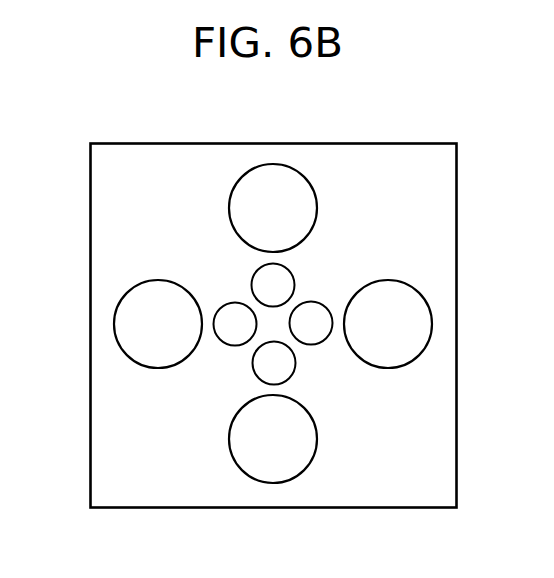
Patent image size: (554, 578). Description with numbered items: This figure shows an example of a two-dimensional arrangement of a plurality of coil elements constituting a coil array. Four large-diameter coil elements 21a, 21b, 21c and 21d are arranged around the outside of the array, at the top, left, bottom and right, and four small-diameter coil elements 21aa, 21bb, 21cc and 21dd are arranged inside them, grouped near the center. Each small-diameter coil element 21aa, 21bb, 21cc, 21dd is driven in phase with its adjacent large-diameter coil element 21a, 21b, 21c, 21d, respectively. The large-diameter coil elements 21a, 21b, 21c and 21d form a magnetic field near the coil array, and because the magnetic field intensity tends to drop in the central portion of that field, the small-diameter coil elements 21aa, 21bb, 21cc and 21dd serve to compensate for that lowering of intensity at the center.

The large-diameter coil element 21a is at (277, 177).
The large-diameter coil element 21b is at (128, 322).
The large-diameter coil element 21c is at (272, 467).
The large-diameter coil element 21d is at (416, 322).
The small-diameter coil element 21aa is at (260, 277).
The small-diameter coil element 21bb is at (227, 333).
The small-diameter coil element 21cc is at (282, 368).
The small-diameter coil element 21dd is at (313, 312).